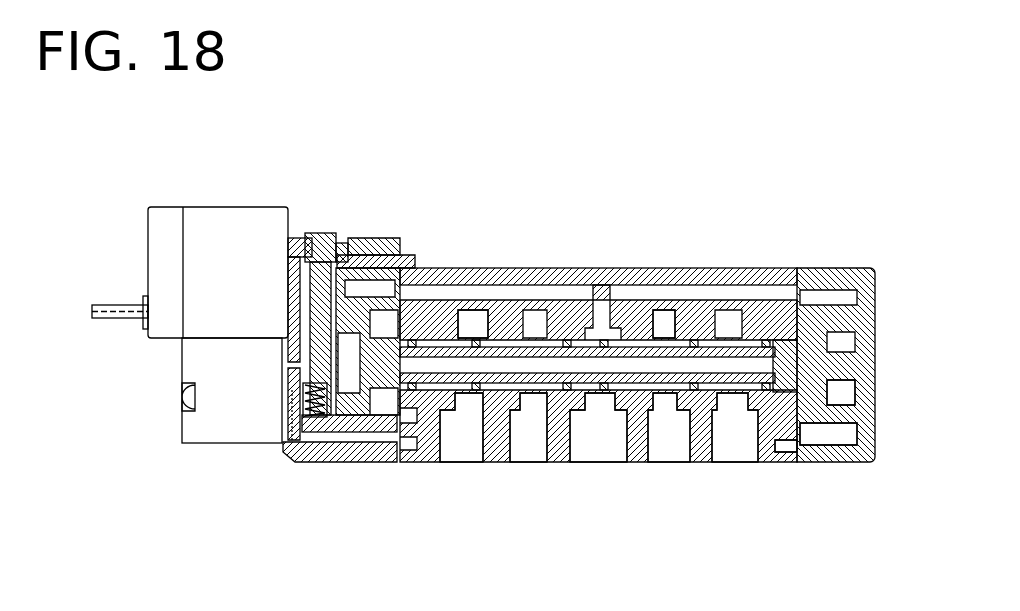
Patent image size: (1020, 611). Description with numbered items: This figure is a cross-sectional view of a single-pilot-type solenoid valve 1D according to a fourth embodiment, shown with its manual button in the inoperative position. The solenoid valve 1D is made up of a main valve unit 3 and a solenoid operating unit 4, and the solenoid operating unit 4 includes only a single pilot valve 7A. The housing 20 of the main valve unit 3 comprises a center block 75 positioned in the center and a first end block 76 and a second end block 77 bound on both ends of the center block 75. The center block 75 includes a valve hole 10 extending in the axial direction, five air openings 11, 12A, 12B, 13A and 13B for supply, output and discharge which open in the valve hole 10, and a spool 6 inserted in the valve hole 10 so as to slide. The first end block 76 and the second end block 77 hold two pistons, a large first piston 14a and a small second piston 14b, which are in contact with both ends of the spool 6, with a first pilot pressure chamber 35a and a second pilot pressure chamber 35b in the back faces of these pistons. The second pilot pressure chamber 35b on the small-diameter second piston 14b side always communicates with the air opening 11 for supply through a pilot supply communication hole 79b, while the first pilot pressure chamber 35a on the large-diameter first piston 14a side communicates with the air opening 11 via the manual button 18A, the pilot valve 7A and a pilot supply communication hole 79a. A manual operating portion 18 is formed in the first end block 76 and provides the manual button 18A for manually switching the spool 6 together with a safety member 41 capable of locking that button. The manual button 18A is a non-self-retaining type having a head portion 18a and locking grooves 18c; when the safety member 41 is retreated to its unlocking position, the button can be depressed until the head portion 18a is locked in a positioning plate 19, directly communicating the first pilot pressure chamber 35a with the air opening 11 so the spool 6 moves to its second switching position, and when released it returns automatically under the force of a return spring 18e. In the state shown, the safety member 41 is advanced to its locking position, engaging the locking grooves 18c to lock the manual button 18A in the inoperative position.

The solenoid valve 1D is at (652, 136).
The main valve unit 3 is at (602, 258).
The solenoid operating unit 4 is at (203, 204).
The spool 6 is at (545, 272).
The pilot valve 7A is at (193, 264).
The valve hole 10 is at (506, 268).
The air opening for supply 11 is at (597, 462).
The air opening 12A is at (532, 462).
The air opening 12B is at (670, 462).
The air opening 13A is at (466, 462).
The air opening 13B is at (740, 462).
The first piston 14a is at (363, 437).
The second piston 14b is at (812, 447).
The manual operating portion 18 is at (336, 214).
The head portion 18a is at (306, 238).
The manual button 18A is at (332, 230).
The locking grooves 18c is at (290, 244).
The return spring 18e is at (317, 432).
The positioning plate 19 is at (288, 256).
The housing 20 is at (716, 253).
The first pilot pressure chamber 35a is at (342, 416).
The second pilot pressure chamber 35b is at (852, 462).
The safety member 41 is at (390, 238).
The center block 75 is at (733, 270).
The first end block 76 is at (387, 462).
The second end block 77 is at (832, 462).
The pilot supply communication hole 79a is at (468, 270).
The pilot supply communication hole 79b is at (705, 272).